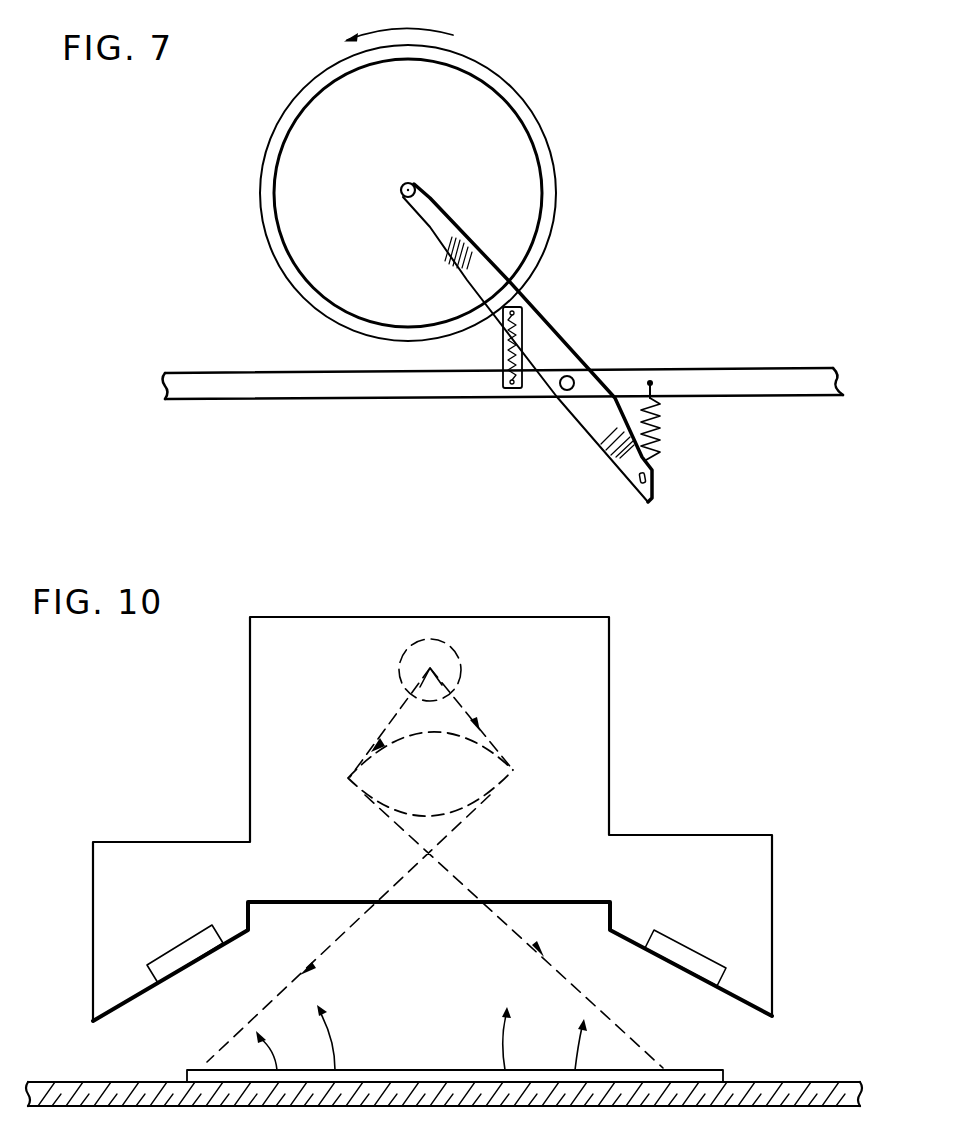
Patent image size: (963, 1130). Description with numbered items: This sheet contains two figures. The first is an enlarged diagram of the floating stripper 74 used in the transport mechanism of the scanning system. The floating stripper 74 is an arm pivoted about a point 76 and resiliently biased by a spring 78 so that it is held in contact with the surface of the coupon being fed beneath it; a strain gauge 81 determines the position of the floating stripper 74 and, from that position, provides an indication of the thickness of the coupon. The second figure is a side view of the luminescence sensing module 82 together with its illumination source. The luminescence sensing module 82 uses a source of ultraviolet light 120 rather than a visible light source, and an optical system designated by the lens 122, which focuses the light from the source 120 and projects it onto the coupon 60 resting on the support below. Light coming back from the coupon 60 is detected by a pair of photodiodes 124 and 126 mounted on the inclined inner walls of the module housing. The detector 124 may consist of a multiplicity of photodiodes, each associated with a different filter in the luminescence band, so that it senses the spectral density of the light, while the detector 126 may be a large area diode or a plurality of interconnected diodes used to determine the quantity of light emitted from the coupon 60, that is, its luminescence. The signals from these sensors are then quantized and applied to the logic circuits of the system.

In FIG. 7, the floating stripper 74 is at (460, 96).
In FIG. 7, the pivot point 76 is at (575, 378).
In FIG. 7, the spring 78 is at (662, 442).
In FIG. 7, the strain gauge 81 is at (503, 338).
In FIG. 10, the luminescence sensing module 82 is at (318, 632).
In FIG. 10, the source of ultraviolet light 120 is at (436, 640).
In FIG. 10, the lens 122 is at (367, 762).
In FIG. 10, the photodiode 124 is at (208, 928).
In FIG. 10, the photodiode 126 is at (662, 937).
In FIG. 10, the coupon 60 is at (393, 1070).